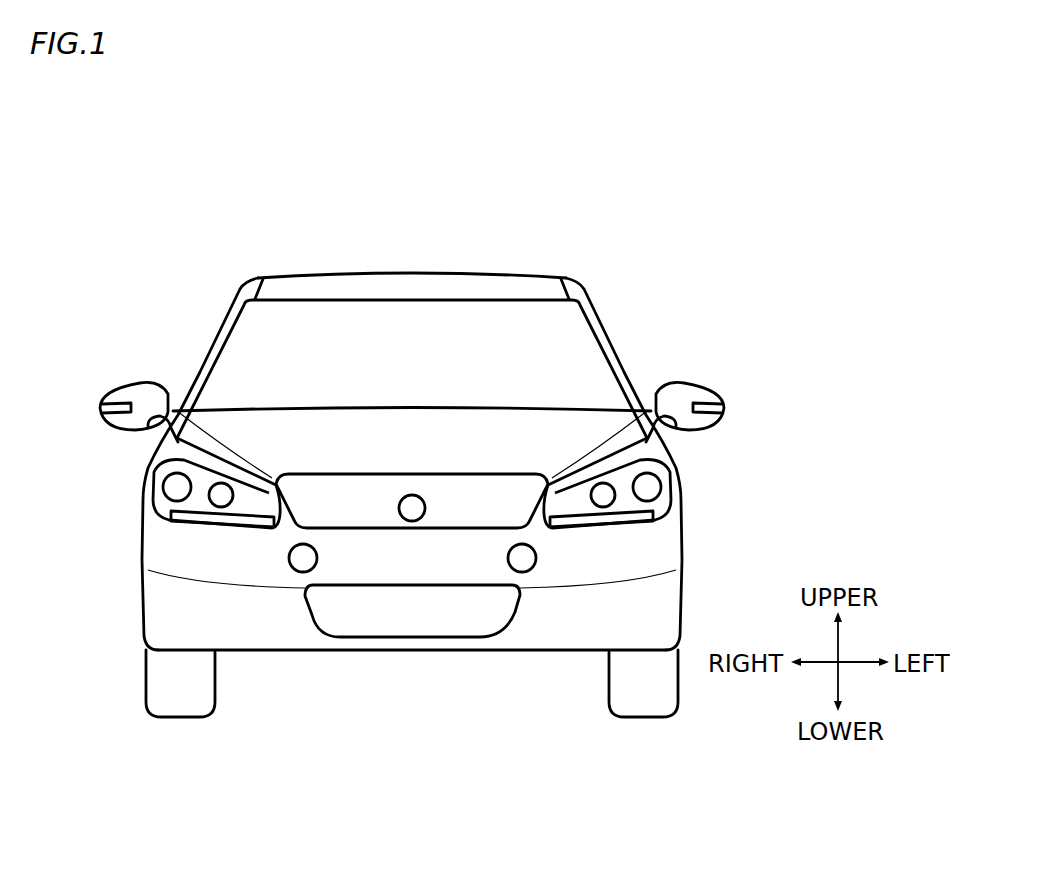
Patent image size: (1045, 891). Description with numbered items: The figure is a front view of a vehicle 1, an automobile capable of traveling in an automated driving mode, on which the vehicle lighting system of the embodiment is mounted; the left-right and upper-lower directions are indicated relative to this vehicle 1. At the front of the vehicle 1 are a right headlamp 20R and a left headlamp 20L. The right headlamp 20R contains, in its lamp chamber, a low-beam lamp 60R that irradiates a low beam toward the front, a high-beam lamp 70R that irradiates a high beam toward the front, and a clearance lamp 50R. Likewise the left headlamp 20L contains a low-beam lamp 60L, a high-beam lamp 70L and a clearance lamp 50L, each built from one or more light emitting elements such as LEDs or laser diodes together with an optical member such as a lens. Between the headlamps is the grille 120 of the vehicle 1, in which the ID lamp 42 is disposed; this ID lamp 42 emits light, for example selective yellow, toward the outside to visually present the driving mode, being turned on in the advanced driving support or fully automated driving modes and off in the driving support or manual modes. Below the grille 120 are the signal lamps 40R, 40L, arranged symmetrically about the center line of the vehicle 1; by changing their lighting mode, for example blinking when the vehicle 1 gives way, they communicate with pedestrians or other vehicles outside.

The vehicle 1 is at (247, 236).
The grille 120 is at (493, 483).
The ID lamp 42 is at (412, 521).
The right headlamp 20R is at (162, 503).
The left headlamp 20L is at (668, 504).
The low-beam lamp 60R is at (174, 487).
The low-beam lamp 60L is at (649, 486).
The high-beam lamp 70R is at (222, 496).
The high-beam lamp 70L is at (602, 496).
The clearance lamp 50R is at (205, 515).
The clearance lamp 50L is at (618, 517).
The signal lamp 40R is at (299, 570).
The signal lamp 40L is at (525, 570).